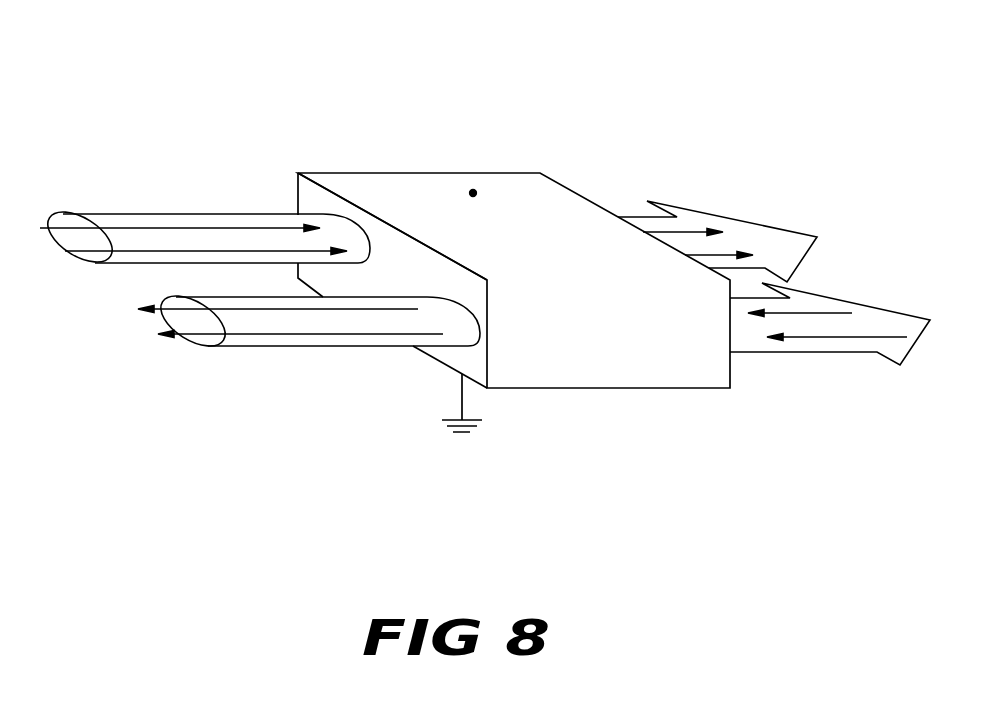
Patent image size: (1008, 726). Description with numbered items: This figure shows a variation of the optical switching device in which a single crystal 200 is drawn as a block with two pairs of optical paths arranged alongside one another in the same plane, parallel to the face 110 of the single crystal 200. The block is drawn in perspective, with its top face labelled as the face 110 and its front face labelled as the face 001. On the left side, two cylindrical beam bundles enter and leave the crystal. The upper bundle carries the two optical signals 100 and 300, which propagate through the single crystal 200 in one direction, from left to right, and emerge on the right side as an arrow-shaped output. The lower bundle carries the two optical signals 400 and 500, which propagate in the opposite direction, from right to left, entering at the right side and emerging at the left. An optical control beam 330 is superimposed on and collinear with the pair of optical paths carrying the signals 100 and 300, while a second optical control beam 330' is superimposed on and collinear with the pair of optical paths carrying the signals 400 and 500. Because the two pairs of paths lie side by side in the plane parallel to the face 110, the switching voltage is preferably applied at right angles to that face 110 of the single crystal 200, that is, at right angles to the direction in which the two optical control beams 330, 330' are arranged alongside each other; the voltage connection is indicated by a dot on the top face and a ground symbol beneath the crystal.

The single crystal 200 is at (543, 138).
The face of the single crystal 110 is at (428, 192).
The (001) crystal front face 001 is at (632, 360).
The optical control beam 330 is at (204, 300).
The optical signal 100 is at (204, 300).
The optical signal 300 is at (107, 272).
The optical control beam 330' is at (309, 382).
The optical signal 400 is at (309, 382).
The optical signal 500 is at (292, 357).